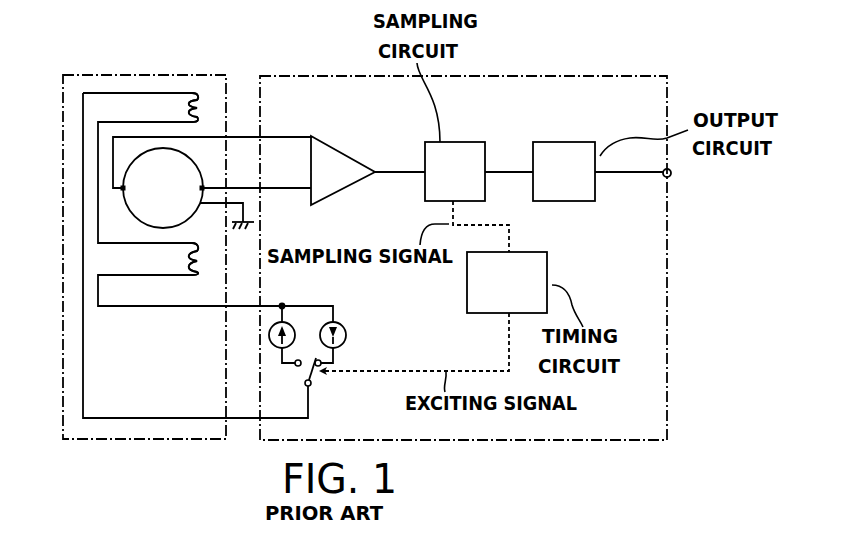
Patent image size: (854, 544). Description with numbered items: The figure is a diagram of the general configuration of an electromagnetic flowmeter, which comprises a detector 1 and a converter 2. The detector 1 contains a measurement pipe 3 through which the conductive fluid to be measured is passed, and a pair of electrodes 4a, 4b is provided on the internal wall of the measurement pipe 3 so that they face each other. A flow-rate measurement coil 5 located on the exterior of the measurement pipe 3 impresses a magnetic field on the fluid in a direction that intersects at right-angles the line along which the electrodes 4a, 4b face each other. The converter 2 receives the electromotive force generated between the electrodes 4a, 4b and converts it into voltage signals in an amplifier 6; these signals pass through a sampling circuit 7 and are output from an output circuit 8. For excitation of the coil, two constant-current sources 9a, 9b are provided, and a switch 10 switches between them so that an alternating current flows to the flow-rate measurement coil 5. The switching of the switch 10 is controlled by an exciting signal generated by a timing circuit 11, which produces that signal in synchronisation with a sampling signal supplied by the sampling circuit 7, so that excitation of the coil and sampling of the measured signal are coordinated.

The detector 1 is at (216, 75).
The converter 2 is at (615, 76).
The measurement pipe 3 is at (196, 166).
The electrode 4a is at (130, 188).
The electrode 4b is at (200, 191).
The flow-rate measurement coil 5 is at (199, 107).
The amplifier 6 is at (349, 157).
The sampling circuit 7 is at (470, 142).
The output circuit 8 is at (588, 142).
The constant-current source 9a is at (282, 349).
The constant-current source 9b is at (347, 335).
The switch 10 is at (315, 375).
The timing circuit 11 is at (537, 252).